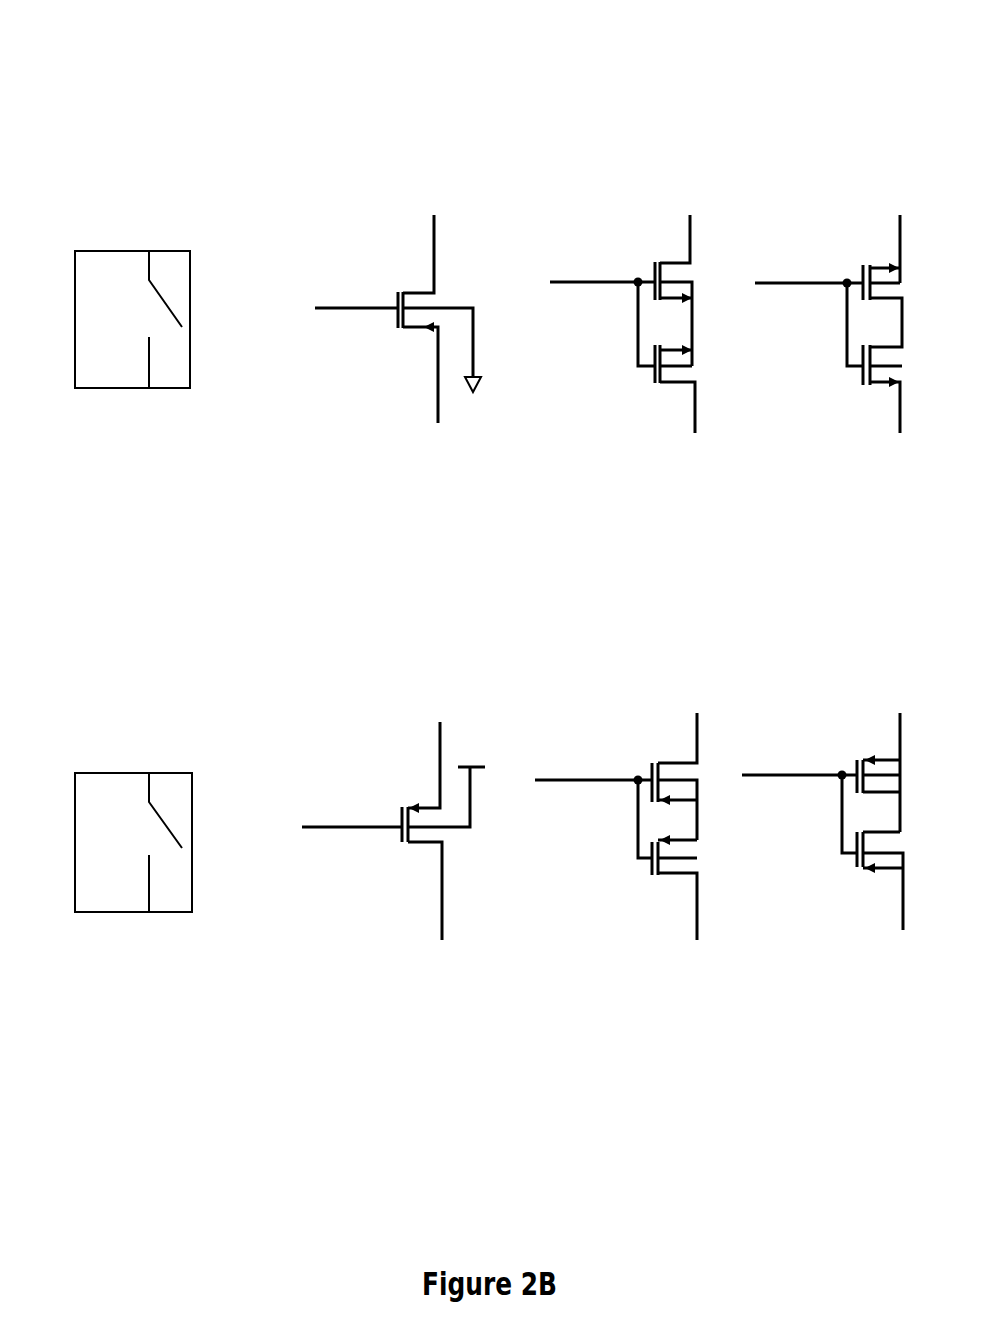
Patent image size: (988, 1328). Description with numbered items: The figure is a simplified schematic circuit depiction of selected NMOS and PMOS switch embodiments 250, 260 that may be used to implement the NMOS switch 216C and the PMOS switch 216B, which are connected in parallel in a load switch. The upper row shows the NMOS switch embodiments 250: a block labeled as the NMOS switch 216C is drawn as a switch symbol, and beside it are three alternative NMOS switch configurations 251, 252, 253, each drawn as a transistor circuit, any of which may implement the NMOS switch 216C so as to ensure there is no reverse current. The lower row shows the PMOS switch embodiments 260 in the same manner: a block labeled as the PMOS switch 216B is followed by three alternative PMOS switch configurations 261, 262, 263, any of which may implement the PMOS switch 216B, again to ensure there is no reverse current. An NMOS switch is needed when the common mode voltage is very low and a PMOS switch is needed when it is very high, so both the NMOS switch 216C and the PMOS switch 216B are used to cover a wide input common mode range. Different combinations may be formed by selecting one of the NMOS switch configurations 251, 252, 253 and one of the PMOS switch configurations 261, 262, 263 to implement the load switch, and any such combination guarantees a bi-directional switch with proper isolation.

The NMOS switch embodiments 250 is at (88, 40).
The NMOS switch 216C is at (132, 319).
The NMOS switch configuration 251 is at (370, 415).
The NMOS switch configuration 252 is at (615, 415).
The NMOS switch configuration 253 is at (832, 415).
The PMOS switch embodiments 260 is at (93, 648).
The PMOS switch 216B is at (133, 842).
The PMOS switch configuration 261 is at (370, 920).
The PMOS switch configuration 262 is at (615, 920).
The PMOS switch configuration 263 is at (832, 920).